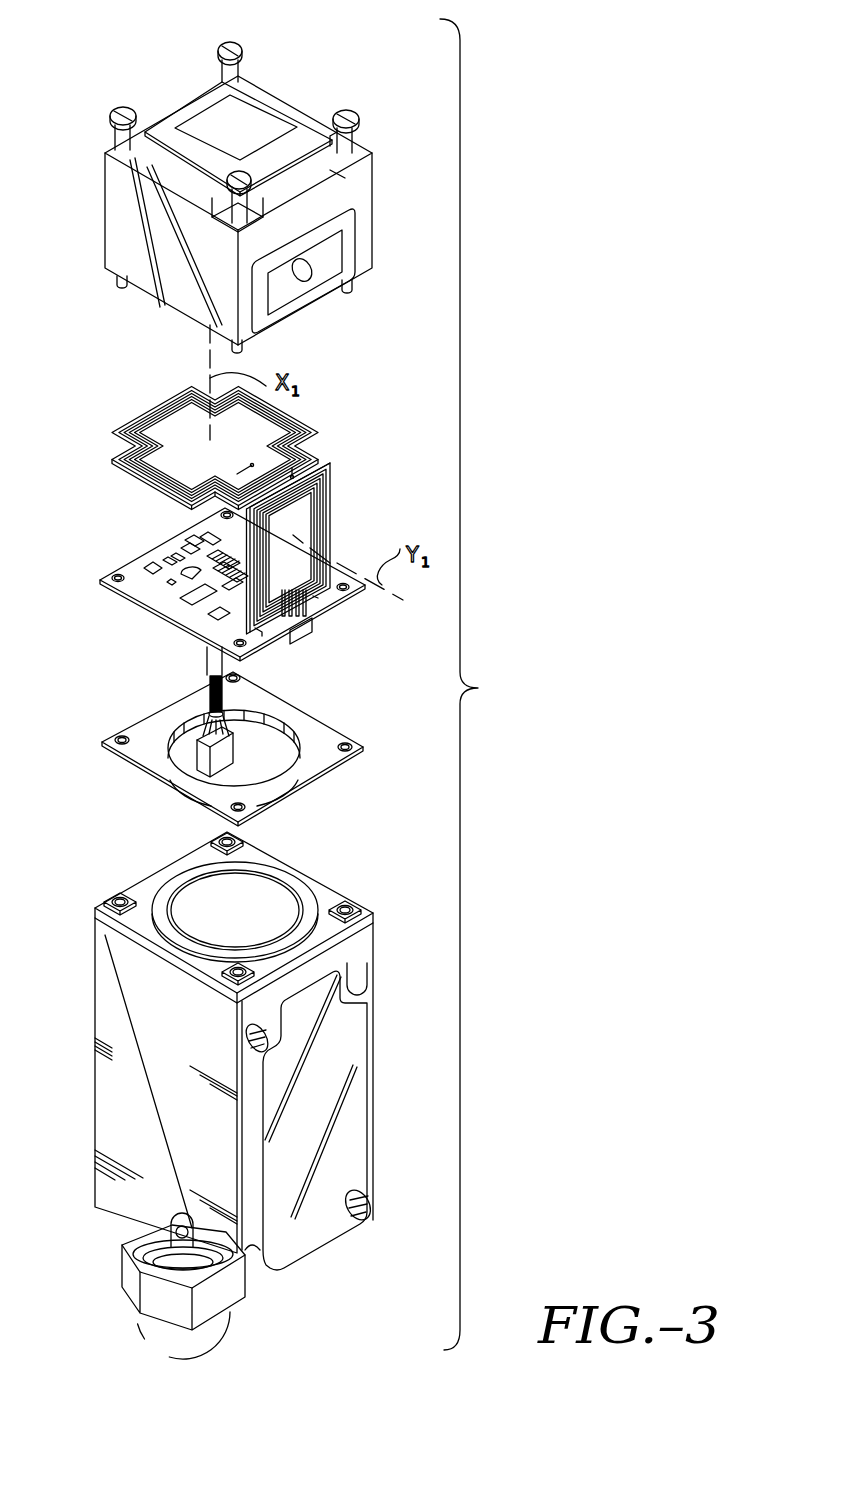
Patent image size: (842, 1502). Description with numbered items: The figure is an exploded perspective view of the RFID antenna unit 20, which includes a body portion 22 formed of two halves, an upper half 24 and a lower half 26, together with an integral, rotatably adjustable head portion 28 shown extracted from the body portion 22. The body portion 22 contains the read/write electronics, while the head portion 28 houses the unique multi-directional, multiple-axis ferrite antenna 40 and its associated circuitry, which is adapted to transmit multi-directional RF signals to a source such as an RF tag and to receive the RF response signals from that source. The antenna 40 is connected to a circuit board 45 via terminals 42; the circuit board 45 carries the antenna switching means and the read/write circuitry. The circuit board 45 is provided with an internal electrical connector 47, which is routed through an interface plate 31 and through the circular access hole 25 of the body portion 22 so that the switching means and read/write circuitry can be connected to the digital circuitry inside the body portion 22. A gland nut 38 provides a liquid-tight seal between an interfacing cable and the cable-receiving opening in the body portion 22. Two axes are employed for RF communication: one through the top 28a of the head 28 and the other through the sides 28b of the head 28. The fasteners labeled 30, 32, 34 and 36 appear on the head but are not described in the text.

The antenna unit 20 is at (477, 684).
The body portion 22 is at (374, 938).
The upper half 24 is at (380, 1102).
The circular access hole 25 is at (238, 886).
The lower half 26 is at (92, 1124).
The head portion 28 is at (298, 92).
The top of the head 28a is at (234, 112).
The sides of the head 28b is at (337, 187).
The screw 30 is at (360, 118).
The interface plate 31 is at (324, 722).
The screw 32 is at (226, 42).
The screw 34 is at (118, 107).
The screw 36 is at (227, 184).
The gland nut 38 is at (120, 1289).
The multi-directional antenna 40 is at (332, 484).
The terminals 42 is at (277, 618).
The circuit board 45 is at (130, 598).
The internal electrical connector 47 is at (203, 655).